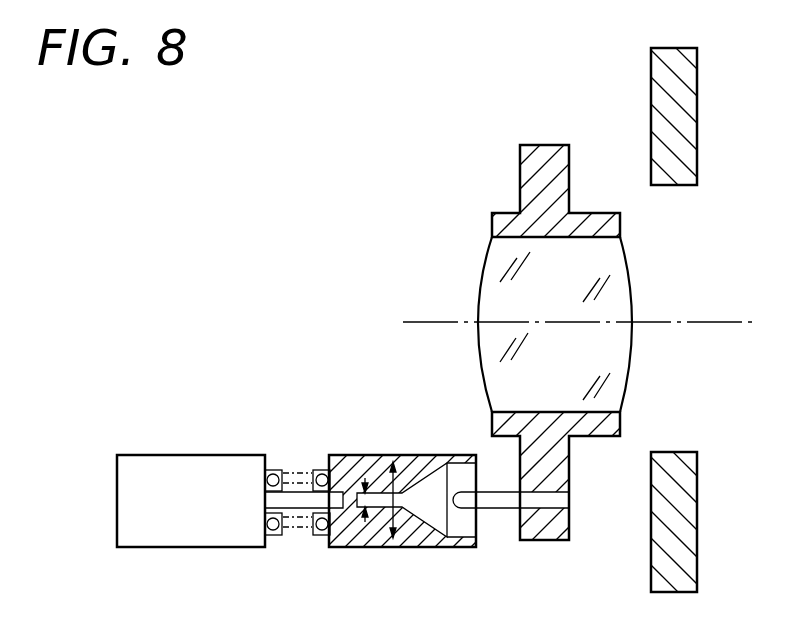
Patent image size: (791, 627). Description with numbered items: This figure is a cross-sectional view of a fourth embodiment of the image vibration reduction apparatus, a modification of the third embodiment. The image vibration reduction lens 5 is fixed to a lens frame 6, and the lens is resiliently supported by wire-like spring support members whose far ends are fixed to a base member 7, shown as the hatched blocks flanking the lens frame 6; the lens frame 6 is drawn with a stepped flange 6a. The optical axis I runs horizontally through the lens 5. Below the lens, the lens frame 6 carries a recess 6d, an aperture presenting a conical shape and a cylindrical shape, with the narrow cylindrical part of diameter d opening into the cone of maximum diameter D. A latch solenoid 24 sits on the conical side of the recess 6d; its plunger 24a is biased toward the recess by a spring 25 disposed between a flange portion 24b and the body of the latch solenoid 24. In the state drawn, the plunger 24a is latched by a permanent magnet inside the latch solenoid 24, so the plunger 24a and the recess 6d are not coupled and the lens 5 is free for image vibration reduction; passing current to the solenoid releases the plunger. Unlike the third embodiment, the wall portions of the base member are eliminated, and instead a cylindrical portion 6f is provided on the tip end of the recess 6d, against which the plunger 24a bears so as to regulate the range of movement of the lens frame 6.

The image vibration reduction lens 5 is at (487, 259).
The lens frame 6 is at (520, 175).
The flange of lens holder 6a is at (607, 214).
The recess 6d is at (428, 510).
The cylindrical portion 6f is at (462, 458).
The base member 7 is at (690, 85).
The optical axis I is at (432, 322).
The latch solenoid 24 is at (188, 542).
The plunger 24a is at (512, 512).
The flange portion 24b is at (333, 457).
The spring 25 is at (284, 470).
The bore diameter D is at (408, 488).
The orifice diameter d is at (375, 500).